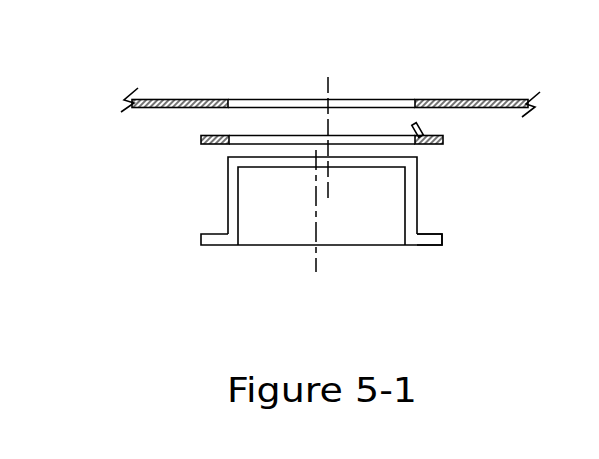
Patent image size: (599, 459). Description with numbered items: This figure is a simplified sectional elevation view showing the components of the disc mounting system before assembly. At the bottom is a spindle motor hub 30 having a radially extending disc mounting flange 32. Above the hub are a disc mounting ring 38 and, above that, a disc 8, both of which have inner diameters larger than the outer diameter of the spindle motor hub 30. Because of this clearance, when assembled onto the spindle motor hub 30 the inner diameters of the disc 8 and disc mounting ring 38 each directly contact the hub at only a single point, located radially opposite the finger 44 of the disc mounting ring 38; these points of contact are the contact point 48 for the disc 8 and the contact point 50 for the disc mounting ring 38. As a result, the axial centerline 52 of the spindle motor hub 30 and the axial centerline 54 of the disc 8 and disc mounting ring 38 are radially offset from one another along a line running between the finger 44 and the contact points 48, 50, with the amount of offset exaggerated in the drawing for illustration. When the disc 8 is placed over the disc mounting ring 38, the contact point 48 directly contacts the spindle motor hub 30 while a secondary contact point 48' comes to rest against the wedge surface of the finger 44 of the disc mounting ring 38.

The disc 8 is at (192, 98).
The contact point 48 is at (207, 57).
The secondary contact point 48' is at (451, 74).
The contact point 50 is at (228, 137).
The axial centerline 54 is at (335, 78).
The disc mounting ring 38 is at (201, 137).
The finger 44 is at (420, 133).
The spindle motor hub 30 is at (233, 203).
The axial centerline 52 is at (316, 223).
The disc mounting flange 32 is at (423, 243).